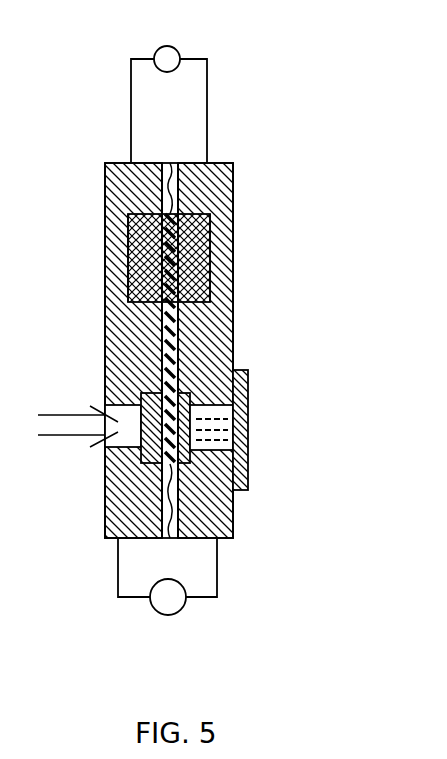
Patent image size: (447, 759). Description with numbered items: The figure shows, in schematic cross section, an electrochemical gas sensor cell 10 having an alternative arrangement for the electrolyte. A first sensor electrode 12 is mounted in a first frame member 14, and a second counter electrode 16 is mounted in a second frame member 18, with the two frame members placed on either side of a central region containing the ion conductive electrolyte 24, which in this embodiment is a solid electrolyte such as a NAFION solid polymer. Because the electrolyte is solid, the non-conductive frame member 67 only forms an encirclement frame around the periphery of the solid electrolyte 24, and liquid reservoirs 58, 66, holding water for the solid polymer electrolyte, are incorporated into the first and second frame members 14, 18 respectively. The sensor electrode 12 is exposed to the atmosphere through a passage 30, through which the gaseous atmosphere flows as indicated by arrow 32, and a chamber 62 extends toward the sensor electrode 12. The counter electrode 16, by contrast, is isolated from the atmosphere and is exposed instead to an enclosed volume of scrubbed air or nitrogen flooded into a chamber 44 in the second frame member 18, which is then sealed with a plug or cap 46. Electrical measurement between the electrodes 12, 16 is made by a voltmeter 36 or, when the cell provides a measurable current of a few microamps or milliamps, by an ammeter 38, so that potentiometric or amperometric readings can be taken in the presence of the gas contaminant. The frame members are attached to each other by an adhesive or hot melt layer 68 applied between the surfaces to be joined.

The electrochemical gas sensor cell 10 is at (234, 106).
The first sensor electrode 12 is at (104, 483).
The first frame member 14 is at (110, 243).
The second counter electrode 16 is at (236, 358).
The second frame member 18 is at (230, 290).
The ion conductive electrolyte 24 is at (205, 230).
The passage 30 is at (104, 382).
The arrow 32 is at (66, 415).
The voltmeter 36 is at (168, 46).
The ammeter 38 is at (168, 615).
The chamber 44 is at (240, 462).
The plug or cap 46 is at (248, 411).
The liquid reservoir 58 is at (130, 267).
The chamber 62 is at (105, 450).
The liquid reservoir 66 is at (208, 262).
The non-conductive frame member 67 is at (166, 333).
The adhesive or hot melt layer 68 is at (176, 180).